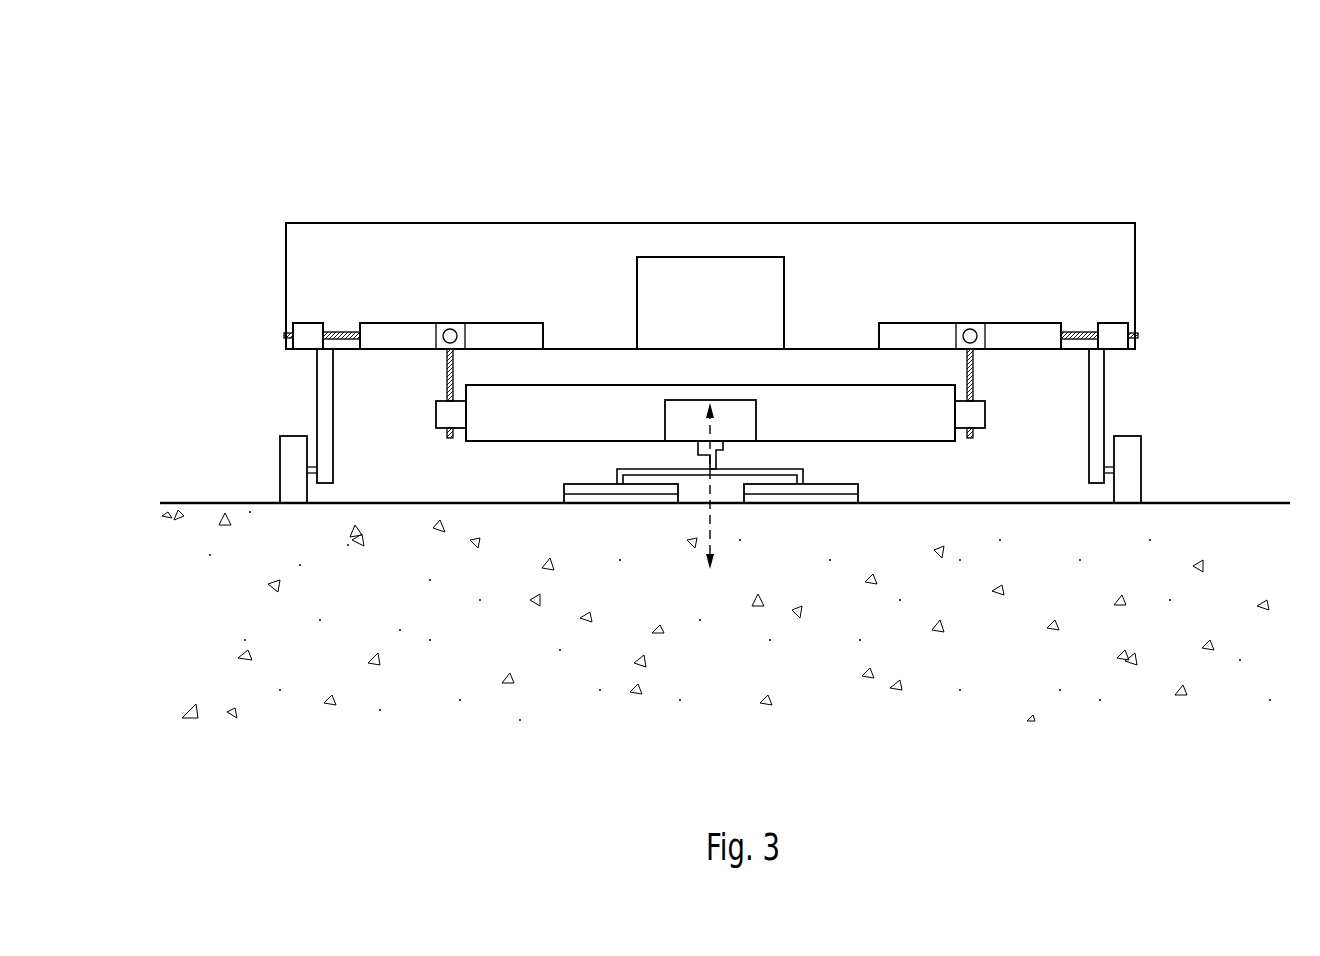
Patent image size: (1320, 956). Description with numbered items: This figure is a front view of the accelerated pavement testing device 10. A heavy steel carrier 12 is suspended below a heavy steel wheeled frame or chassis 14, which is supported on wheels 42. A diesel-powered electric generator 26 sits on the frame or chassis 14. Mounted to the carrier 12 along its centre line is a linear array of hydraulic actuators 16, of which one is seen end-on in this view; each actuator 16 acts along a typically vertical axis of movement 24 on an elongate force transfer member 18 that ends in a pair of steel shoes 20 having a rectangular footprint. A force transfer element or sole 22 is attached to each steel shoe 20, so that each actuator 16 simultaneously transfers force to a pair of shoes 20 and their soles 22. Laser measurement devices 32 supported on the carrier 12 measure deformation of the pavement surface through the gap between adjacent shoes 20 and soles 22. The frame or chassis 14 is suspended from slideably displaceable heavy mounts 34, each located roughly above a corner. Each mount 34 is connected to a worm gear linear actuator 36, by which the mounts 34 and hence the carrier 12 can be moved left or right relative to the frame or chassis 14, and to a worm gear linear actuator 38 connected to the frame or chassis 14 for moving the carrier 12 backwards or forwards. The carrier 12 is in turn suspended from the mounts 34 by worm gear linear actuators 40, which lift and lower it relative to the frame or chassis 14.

The accelerated pavement testing device 10 is at (1194, 118).
The carrier 12 is at (934, 432).
The frame or chassis 14 is at (1110, 234).
The hydraulic actuator 16 is at (723, 449).
The force transfer member 18 is at (708, 462).
The steel shoes 20 is at (580, 483).
The sole 22 is at (617, 504).
The axis of movement 24 is at (713, 537).
The diesel-powered electric generator 26 is at (773, 294).
The laser measurement devices 32 is at (741, 431).
The mounts 34 is at (514, 329).
The worm gear linear actuator 36 is at (304, 326).
The worm gear linear actuator 38 is at (448, 326).
The worm gear linear actuators 40 is at (442, 416).
The wheels 42 is at (290, 441).